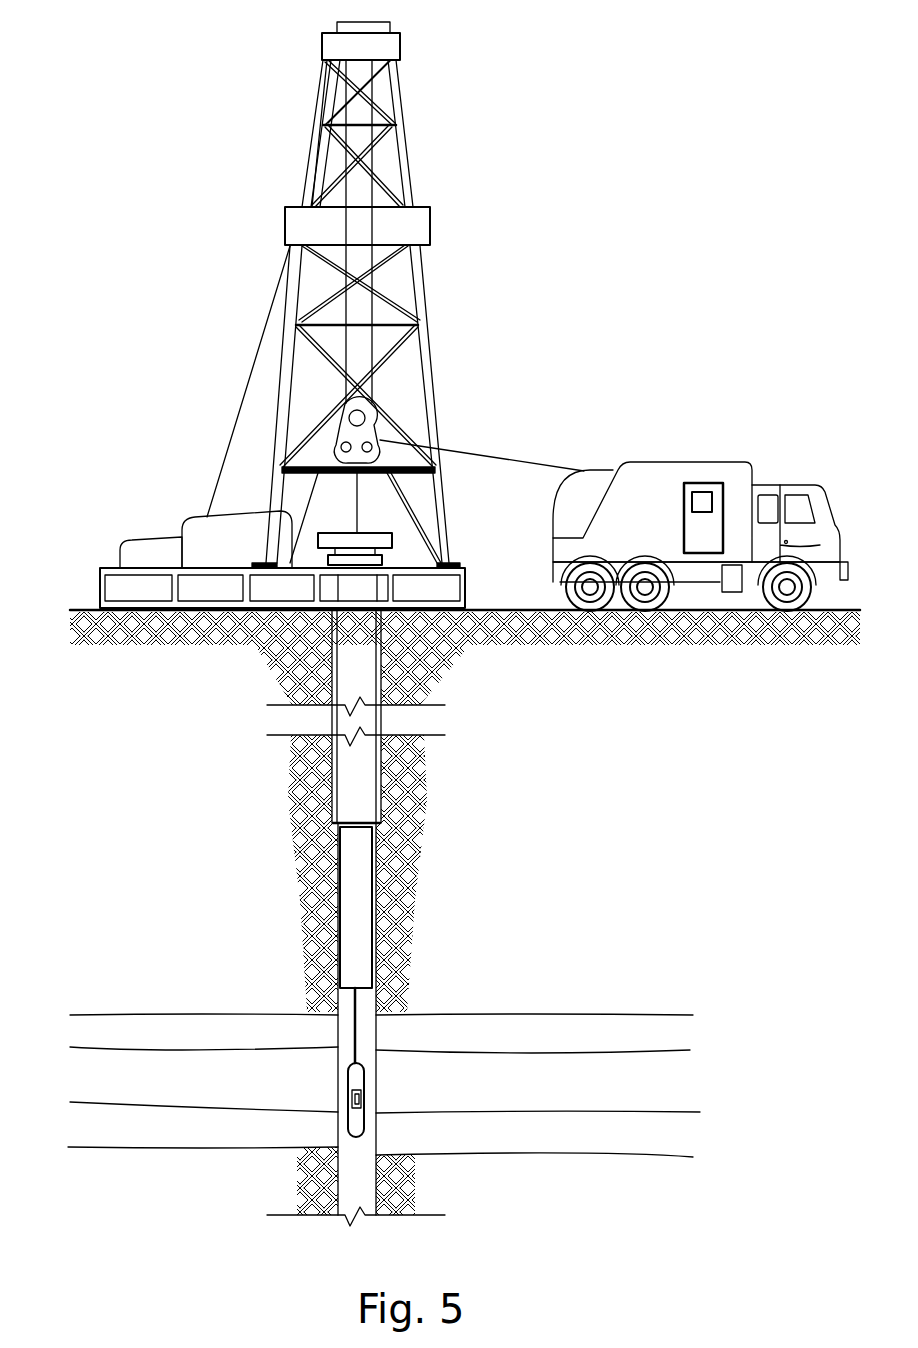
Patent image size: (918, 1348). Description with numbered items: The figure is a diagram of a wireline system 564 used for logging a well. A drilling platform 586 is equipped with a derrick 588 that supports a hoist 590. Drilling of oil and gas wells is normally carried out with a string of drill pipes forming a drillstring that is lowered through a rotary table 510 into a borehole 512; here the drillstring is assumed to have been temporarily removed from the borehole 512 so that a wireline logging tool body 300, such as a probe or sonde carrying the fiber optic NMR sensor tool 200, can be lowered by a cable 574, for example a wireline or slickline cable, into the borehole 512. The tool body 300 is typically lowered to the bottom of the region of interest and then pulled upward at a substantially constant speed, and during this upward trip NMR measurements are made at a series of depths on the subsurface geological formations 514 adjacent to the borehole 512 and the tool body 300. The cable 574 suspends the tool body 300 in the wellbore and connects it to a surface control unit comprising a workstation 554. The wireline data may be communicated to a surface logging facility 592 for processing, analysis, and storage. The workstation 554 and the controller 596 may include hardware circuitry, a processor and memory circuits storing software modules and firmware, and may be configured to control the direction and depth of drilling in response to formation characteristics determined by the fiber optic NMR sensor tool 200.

The wireline system 564 is at (638, 228).
The hoist 590 is at (367, 413).
The cable 574 is at (483, 455).
The surface logging facility 592 is at (650, 462).
The controller 596 is at (704, 490).
The workstation 554 is at (683, 535).
The rotary table 510 is at (392, 535).
The derrick 588 is at (447, 560).
The drilling platform 586 is at (464, 600).
The borehole 512 is at (338, 1080).
The wireline logging tool body 300 is at (365, 1080).
The fiber optic NMR sensor tool 200 is at (362, 1099).
The subsurface geological formations 514 is at (707, 1008).